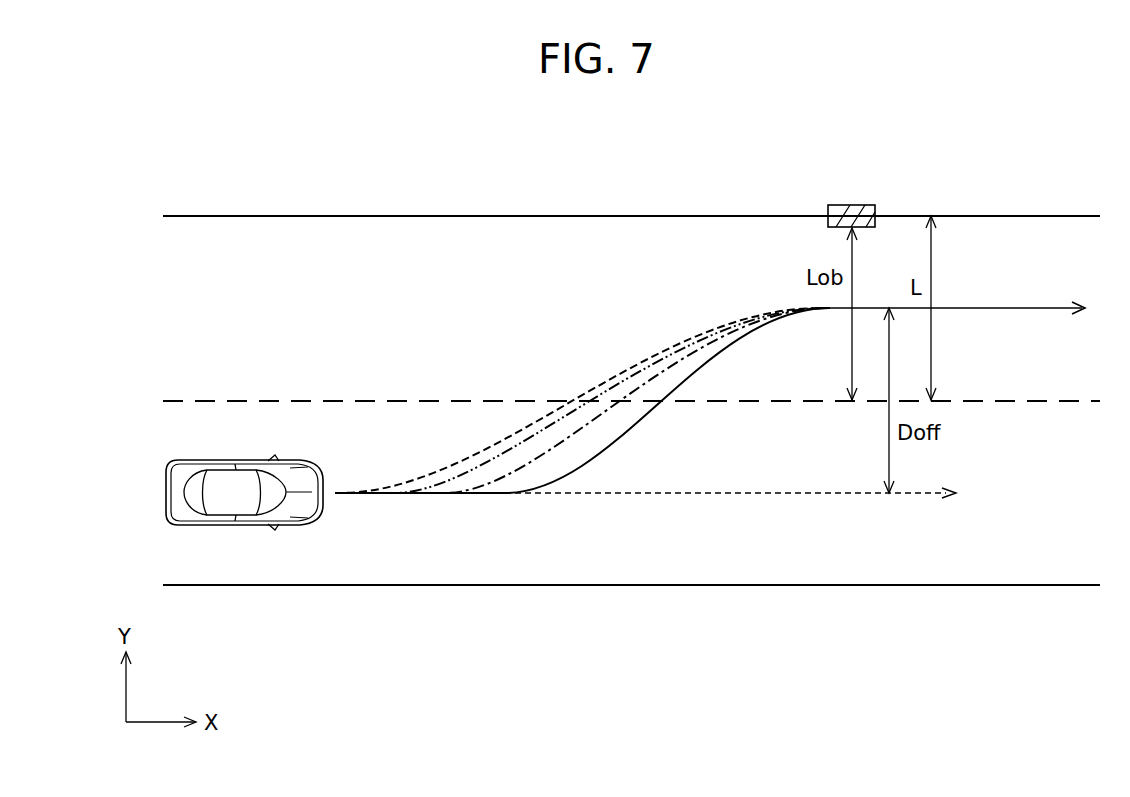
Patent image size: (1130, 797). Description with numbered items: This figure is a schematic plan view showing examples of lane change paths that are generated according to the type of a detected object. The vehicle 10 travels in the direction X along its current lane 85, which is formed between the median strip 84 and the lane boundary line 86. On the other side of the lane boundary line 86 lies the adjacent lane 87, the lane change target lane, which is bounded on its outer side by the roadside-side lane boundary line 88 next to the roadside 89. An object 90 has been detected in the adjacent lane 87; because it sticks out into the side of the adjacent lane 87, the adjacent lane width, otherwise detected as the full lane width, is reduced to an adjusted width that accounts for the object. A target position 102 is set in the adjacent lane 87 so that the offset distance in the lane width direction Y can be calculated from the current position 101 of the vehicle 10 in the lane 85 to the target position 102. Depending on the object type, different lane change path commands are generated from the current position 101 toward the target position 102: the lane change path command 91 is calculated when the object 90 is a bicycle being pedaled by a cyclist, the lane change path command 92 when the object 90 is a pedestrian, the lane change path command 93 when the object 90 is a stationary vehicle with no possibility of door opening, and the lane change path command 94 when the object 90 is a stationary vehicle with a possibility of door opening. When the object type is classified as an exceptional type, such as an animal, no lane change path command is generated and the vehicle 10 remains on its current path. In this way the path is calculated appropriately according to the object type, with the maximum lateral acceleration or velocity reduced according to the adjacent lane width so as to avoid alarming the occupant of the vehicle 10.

The vehicle 10 is at (165, 490).
The median strip 84 is at (998, 586).
The lane 85 is at (1078, 507).
The lane boundary line 86 is at (1020, 404).
The adjacent lane 87 is at (1080, 354).
The lane boundary line 88 is at (998, 216).
The roadside 89 is at (564, 202).
The object 90 is at (850, 204).
The lane change path command (ID1) 91 is at (620, 375).
The lane change path command (ID2) 92 is at (503, 449).
The lane change path command (ID3) 93 is at (712, 358).
The lane change path command (ID4) 94 is at (575, 434).
The current position 101 is at (762, 494).
The target position 102 is at (1000, 308).